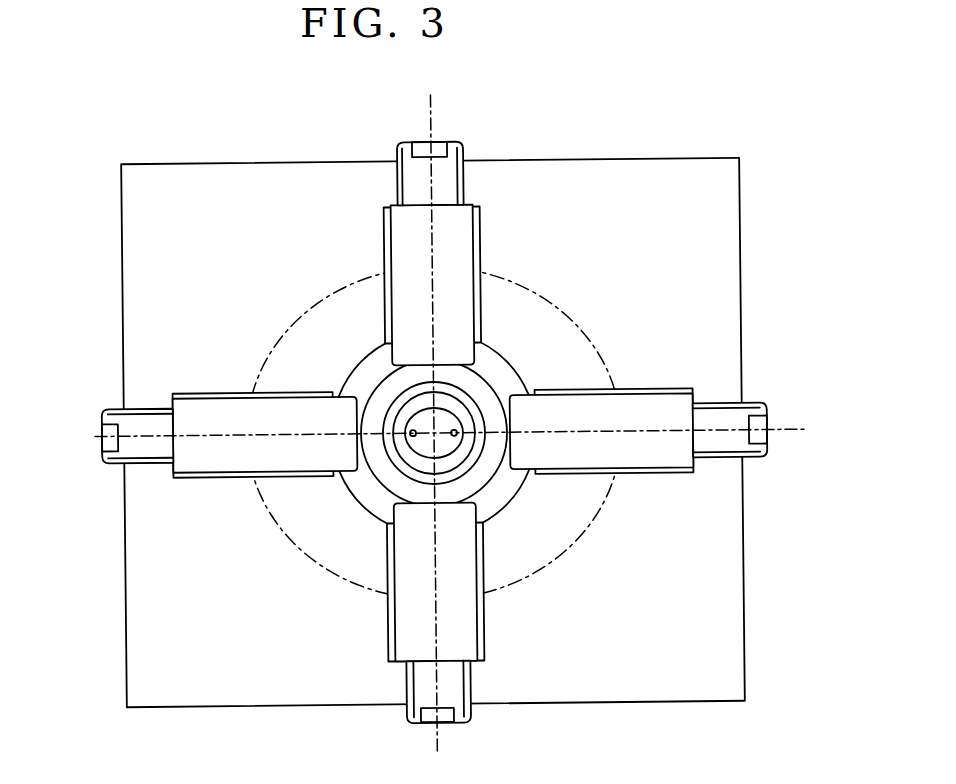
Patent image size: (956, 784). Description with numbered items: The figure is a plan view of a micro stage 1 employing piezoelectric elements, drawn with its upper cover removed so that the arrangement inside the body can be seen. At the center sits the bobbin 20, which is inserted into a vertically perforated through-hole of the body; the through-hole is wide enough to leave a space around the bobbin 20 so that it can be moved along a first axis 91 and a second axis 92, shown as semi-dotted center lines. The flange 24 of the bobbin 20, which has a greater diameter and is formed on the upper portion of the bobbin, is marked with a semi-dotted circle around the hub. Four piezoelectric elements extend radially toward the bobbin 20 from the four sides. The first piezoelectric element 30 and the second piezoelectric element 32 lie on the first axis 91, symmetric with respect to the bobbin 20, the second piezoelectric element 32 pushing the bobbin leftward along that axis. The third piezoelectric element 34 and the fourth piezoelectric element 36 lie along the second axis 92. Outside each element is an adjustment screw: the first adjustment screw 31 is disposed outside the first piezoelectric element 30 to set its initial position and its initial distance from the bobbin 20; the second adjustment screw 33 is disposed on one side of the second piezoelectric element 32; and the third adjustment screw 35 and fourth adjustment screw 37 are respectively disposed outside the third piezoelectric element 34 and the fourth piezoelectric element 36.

The micro stage 1 is at (730, 119).
The bobbin 20 is at (383, 476).
The flange 24 is at (300, 548).
The first piezoelectric element 30 is at (200, 455).
The first adjustment screw 31 is at (130, 428).
The second piezoelectric element 32 is at (645, 448).
The second adjustment screw 33 is at (727, 420).
The third piezoelectric element 34 is at (453, 227).
The third adjustment screw 35 is at (447, 170).
The fourth piezoelectric element 36 is at (457, 632).
The fourth adjustment screw 37 is at (423, 677).
The first axis 91 is at (783, 430).
The second axis 92 is at (432, 118).